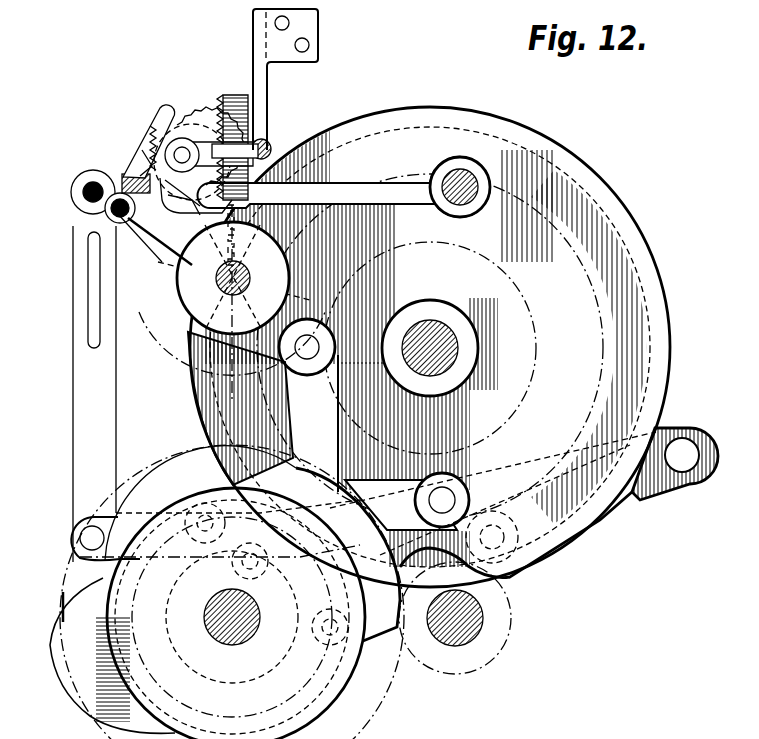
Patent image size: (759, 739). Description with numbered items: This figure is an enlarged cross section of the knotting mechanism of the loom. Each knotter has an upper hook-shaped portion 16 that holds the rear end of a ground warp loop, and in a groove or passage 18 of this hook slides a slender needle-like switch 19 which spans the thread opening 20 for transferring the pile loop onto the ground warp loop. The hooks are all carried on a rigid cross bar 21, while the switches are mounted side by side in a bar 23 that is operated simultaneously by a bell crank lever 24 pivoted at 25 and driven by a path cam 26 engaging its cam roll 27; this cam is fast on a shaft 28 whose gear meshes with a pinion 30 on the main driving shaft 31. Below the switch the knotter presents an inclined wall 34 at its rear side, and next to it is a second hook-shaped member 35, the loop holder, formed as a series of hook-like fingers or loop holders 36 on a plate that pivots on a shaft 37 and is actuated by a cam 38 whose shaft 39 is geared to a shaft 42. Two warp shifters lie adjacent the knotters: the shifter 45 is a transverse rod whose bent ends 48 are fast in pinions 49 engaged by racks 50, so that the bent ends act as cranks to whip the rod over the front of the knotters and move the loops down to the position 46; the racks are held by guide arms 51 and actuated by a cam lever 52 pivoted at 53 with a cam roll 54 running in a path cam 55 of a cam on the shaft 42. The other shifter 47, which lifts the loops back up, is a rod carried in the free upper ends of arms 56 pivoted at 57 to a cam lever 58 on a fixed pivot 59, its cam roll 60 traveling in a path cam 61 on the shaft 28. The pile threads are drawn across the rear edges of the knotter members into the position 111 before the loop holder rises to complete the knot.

The hook-shaped portion of the knotter 16 is at (166, 110).
The groove or passage 18 is at (142, 150).
The switch 19 is at (150, 131).
The thread opening 20 is at (162, 114).
The cross bar 21 is at (106, 211).
The bar 23 is at (117, 220).
The bell crank lever 24 is at (172, 287).
The pivot 25 is at (320, 342).
The path cam 26 is at (228, 732).
The cam roll 27 is at (322, 646).
The shaft 28 is at (204, 620).
The pinion 30 is at (492, 664).
The main driving shaft 31 is at (485, 626).
The inclined wall 34 is at (138, 175).
The second hook-shaped member 35 is at (410, 204).
The loop holder 36 is at (230, 228).
The shaft 37 is at (478, 183).
The cam 38 is at (284, 272).
The shaft 39 is at (215, 335).
The shaft 42 is at (448, 332).
The warp shifter 45 is at (270, 148).
The position 46 is at (188, 204).
The warp shifter 47 is at (82, 193).
The bent ends 48 is at (242, 148).
The pinions 49 is at (196, 104).
The racks 50 is at (220, 95).
The guide arms 51 is at (275, 91).
The cam lever 52 is at (656, 496).
The pivot 53 is at (690, 438).
The cam roll 54 is at (540, 556).
The path cam 55 is at (650, 326).
The arms 56 is at (73, 402).
The pivot 57 is at (80, 540).
The cam lever 58 is at (156, 476).
The fixed pivot 59 is at (455, 488).
The cam roll 60 is at (200, 506).
The path cam 61 is at (70, 678).
The position of the pile threads 111 is at (122, 180).